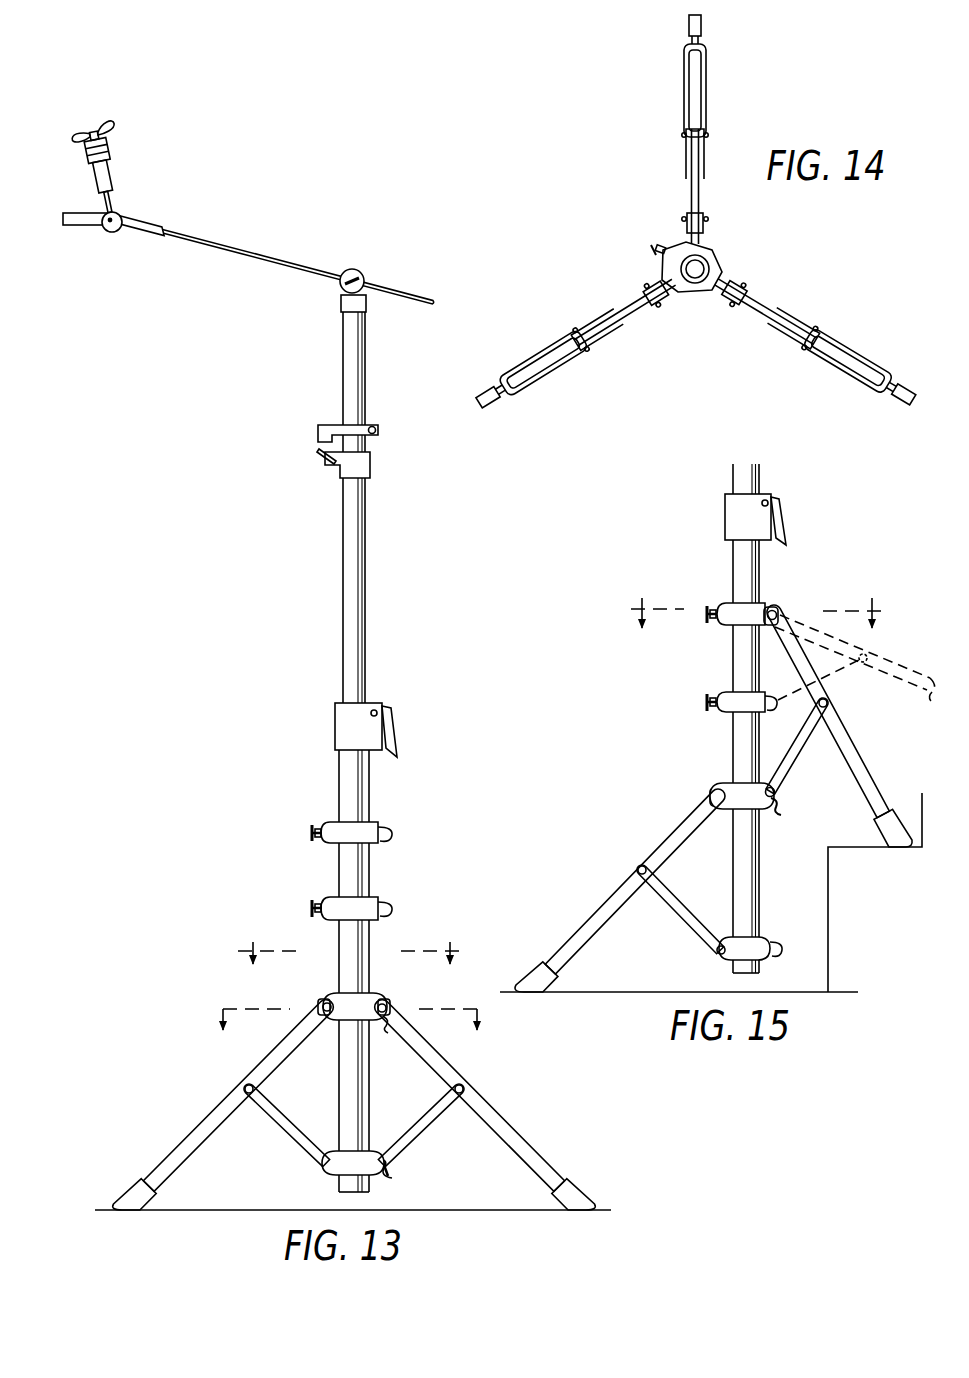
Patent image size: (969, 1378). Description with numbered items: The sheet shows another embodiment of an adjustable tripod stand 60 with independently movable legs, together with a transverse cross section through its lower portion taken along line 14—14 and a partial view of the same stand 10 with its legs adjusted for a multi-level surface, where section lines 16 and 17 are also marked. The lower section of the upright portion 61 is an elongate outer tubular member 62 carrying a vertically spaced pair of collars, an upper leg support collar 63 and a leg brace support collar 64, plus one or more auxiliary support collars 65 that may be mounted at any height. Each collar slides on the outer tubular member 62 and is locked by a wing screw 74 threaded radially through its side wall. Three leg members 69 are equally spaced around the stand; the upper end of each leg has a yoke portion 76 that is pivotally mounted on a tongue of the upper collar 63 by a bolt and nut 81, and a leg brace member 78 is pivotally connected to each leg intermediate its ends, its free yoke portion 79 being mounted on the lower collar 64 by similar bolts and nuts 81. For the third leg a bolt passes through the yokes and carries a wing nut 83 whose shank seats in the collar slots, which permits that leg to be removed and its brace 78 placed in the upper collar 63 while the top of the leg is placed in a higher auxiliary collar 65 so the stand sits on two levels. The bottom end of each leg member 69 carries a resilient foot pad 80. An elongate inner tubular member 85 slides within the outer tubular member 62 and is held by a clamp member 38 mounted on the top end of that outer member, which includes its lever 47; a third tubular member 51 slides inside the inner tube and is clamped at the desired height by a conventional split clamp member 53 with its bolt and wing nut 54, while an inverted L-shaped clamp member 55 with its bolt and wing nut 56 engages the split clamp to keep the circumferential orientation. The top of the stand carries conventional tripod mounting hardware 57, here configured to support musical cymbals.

In FIG. 15, the microphone stand 10 is at (658, 558).
In FIG. 13, the section line 14— 14 is at (351, 940).
In FIG. 13, the section line 16- 16 is at (351, 1033).
In FIG. 15, the section line 17- 17 is at (757, 600).
In FIG. 13, the clamp member 38 is at (345, 723).
In FIG. 15, the clamp member 38 is at (727, 507).
In FIG. 13, the clamp lever 47 is at (397, 740).
In FIG. 15, the clamp lever 47 is at (786, 524).
In FIG. 13, the third tubular member 51 is at (365, 371).
In FIG. 13, the split clamp member 53 is at (362, 468).
In FIG. 13, the bolt and wing nut 54 is at (325, 458).
In FIG. 13, the inverted L-shaped clamp member 55 is at (347, 427).
In FIG. 13, the bolt and wing nut 56 is at (376, 430).
In FIG. 13, the tripod mounting hardware 57 is at (265, 240).
In FIG. 13, the adjustable tripod stand 60 is at (232, 712).
In FIG. 14, the adjustable tripod stand 60 is at (624, 206).
In FIG. 13, the upright portion 61 is at (320, 782).
In FIG. 15, the upright portion 61 is at (730, 561).
In FIG. 13, the outer tubular member 62 is at (360, 802).
In FIG. 14, the outer tubular member 62 is at (690, 281).
In FIG. 15, the outer tubular member 62 is at (751, 569).
In FIG. 13, the upper leg support collar 63 is at (365, 996).
In FIG. 14, the upper leg support collar 63 is at (719, 261).
In FIG. 15, the upper leg support collar 63 is at (732, 783).
In FIG. 13, the leg brace support collar 64 is at (340, 1174).
In FIG. 15, the leg brace support collar 64 is at (751, 940).
In FIG. 13, the auxiliary support collar 65 is at (356, 838).
In FIG. 15, the auxiliary support collar 65 is at (739, 621).
In FIG. 13, the leg member 69 is at (185, 1130).
In FIG. 14, the leg member 69 is at (683, 90).
In FIG. 15, the leg member 69 is at (859, 757).
In FIG. 13, the wing screw 74 is at (310, 833).
In FIG. 14, the wing screw 74 is at (656, 247).
In FIG. 15, the wing screw 74 is at (705, 617).
In FIG. 13, the yoke portion 76 is at (316, 1000).
In FIG. 14, the yoke portion 76 is at (687, 222).
In FIG. 15, the yoke portion 76 is at (778, 609).
In FIG. 13, the leg brace member 78 is at (286, 1116).
In FIG. 14, the leg brace member 78 is at (707, 159).
In FIG. 15, the leg brace member 78 is at (797, 758).
In FIG. 13, the yoke portion 79 is at (324, 1152).
In FIG. 15, the yoke portion 79 is at (777, 795).
In FIG. 13, the foot pad 80 is at (134, 1184).
In FIG. 14, the foot pad 80 is at (701, 27).
In FIG. 15, the foot pad 80 is at (897, 836).
In FIG. 13, the bolt and nut 81 is at (325, 1003).
In FIG. 13, the wing nut 83 is at (384, 1024).
In FIG. 15, the wing nut 83 is at (776, 805).
In FIG. 13, the inner tubular member 85 is at (357, 645).
In FIG. 15, the inner tubular member 85 is at (739, 468).